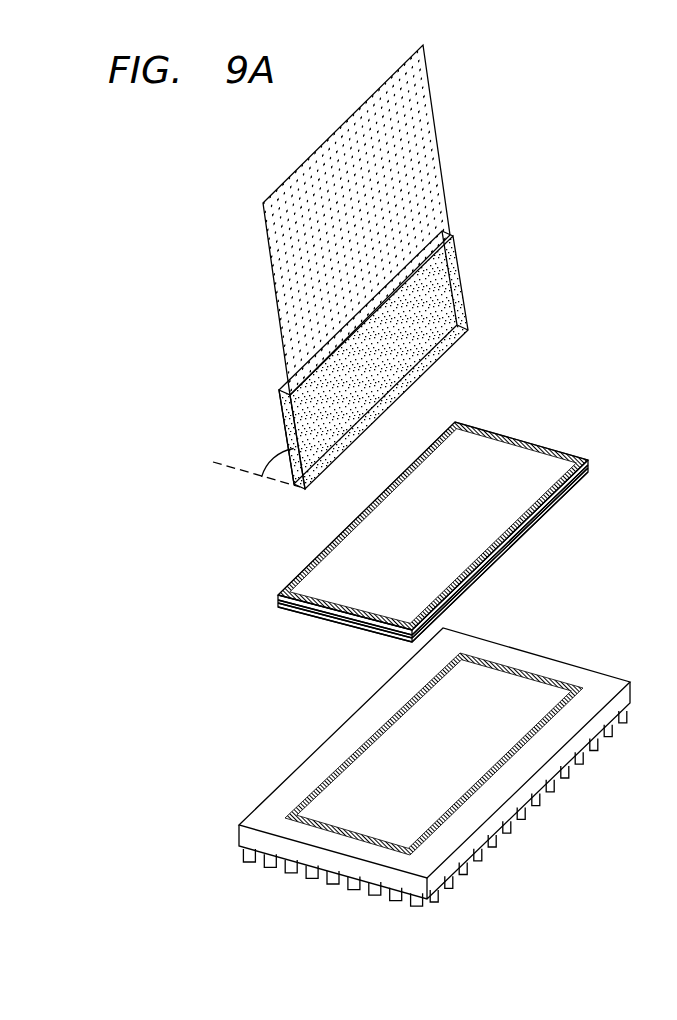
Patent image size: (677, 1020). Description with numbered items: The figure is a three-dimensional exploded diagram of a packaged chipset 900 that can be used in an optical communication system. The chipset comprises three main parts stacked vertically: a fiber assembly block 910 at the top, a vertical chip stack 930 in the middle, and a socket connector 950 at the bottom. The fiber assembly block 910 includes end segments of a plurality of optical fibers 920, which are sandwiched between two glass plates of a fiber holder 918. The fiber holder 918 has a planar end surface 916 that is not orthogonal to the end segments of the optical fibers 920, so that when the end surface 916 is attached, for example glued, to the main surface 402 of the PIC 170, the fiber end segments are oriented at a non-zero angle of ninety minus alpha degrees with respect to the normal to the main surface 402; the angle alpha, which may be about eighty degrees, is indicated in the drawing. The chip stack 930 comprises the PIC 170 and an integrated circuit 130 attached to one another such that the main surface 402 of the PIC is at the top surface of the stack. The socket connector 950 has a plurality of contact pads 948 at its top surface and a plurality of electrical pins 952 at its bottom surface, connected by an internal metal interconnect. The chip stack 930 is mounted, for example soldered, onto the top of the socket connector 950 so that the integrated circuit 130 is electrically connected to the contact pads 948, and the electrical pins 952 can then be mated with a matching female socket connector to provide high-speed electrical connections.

The packaged chipset 900 is at (209, 129).
The fiber assembly block 910 is at (512, 186).
The optical fibers 920 is at (423, 122).
The fiber holder 918 is at (462, 295).
The planar end surface 916 is at (299, 501).
The vertical chip stack 930 is at (582, 437).
The main surface 402 is at (382, 519).
The PIC 170 is at (278, 596).
The integrated circuit 130 is at (278, 604).
The socket connector 950 is at (590, 810).
The contact pads 948 is at (420, 690).
The electrical pins 952 is at (243, 852).